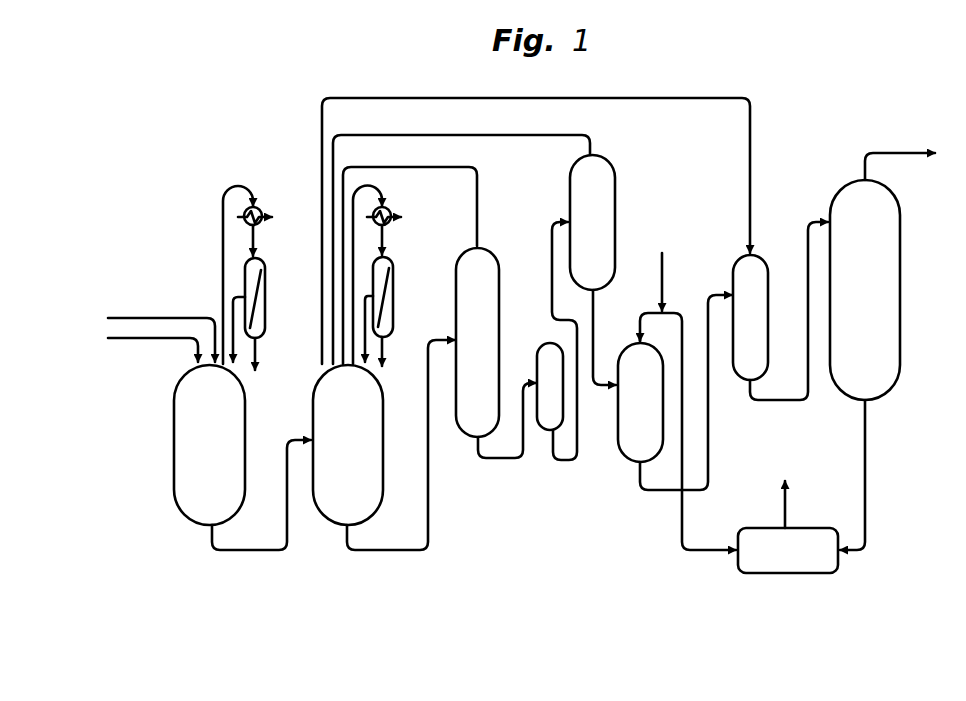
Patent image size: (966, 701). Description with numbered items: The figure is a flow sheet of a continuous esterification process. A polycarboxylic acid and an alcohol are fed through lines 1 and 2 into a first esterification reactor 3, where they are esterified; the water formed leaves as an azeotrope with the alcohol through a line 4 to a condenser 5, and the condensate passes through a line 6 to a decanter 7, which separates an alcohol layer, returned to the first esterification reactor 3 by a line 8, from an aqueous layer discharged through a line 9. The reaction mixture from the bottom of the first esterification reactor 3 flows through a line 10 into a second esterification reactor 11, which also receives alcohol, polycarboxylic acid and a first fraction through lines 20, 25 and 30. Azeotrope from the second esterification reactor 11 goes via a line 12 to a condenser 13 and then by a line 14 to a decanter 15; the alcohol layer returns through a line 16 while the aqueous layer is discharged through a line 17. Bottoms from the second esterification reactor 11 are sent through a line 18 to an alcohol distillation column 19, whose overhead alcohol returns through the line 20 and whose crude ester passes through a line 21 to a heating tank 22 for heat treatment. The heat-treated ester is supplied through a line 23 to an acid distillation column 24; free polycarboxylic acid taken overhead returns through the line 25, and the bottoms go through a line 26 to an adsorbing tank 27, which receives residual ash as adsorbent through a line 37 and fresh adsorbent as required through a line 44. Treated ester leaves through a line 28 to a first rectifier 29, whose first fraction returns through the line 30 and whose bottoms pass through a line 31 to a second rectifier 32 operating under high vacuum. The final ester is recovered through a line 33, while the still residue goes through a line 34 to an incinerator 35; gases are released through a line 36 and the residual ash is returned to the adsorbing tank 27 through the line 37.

The line 1 is at (148, 318).
The line 2 is at (143, 340).
The first esterification reactor 3 is at (199, 458).
The line 4 is at (221, 243).
The condenser 5 is at (261, 208).
The line 6 is at (258, 244).
The decanter 7 is at (267, 320).
The line 8 is at (236, 360).
The line 9 is at (260, 356).
The line 10 is at (247, 551).
The second esterification reactor 11 is at (335, 458).
The line 12 is at (356, 262).
The condenser 13 is at (391, 209).
The line 14 is at (385, 240).
The decanter 15 is at (395, 297).
The line 16 is at (368, 352).
The line 17 is at (386, 355).
The line 18 is at (432, 508).
The alcohol distillation column 19 is at (490, 358).
The line 20 is at (480, 212).
The line 21 is at (507, 460).
The heating tank 22 is at (539, 354).
The line 23 is at (552, 283).
The acid distillation column 24 is at (580, 243).
The line 25 is at (512, 137).
The line 26 is at (597, 313).
The adsorbing tank 27 is at (653, 422).
The line 28 is at (712, 437).
The first rectifier 29 is at (769, 321).
The line 30 is at (650, 100).
The line 31 is at (805, 402).
The second rectifier 32 is at (850, 307).
The line 33 is at (905, 151).
The line 34 is at (870, 478).
The incinerator 35 is at (773, 567).
The line 36 is at (788, 497).
The line 37 is at (682, 530).
The line 44 is at (665, 266).